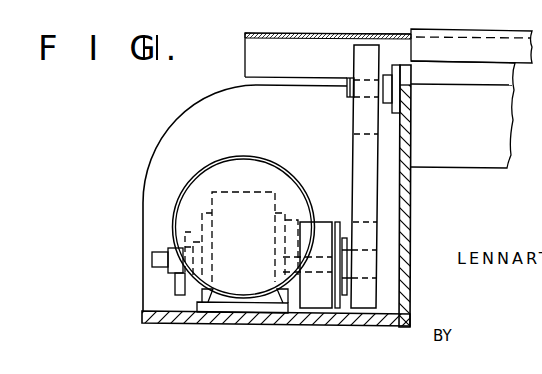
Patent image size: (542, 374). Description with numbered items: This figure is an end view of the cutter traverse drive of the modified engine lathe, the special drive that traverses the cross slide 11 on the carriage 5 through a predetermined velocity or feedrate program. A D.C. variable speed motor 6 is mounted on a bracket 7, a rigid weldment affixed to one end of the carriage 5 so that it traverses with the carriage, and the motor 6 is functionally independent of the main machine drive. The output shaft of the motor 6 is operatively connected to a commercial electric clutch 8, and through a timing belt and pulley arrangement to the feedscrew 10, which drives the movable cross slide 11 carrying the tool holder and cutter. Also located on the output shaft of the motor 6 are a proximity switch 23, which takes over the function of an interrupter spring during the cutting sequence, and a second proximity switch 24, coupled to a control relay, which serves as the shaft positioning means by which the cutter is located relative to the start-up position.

The carriage 5 is at (497, 141).
The D.C. variable speed motor 6 is at (215, 163).
The bracket 7 is at (403, 244).
The electric clutch 8 is at (316, 298).
The feedscrew 10 is at (346, 96).
The cross slide 11 is at (478, 33).
The proximity switch 23 is at (173, 289).
The proximity switch 24 is at (172, 239).